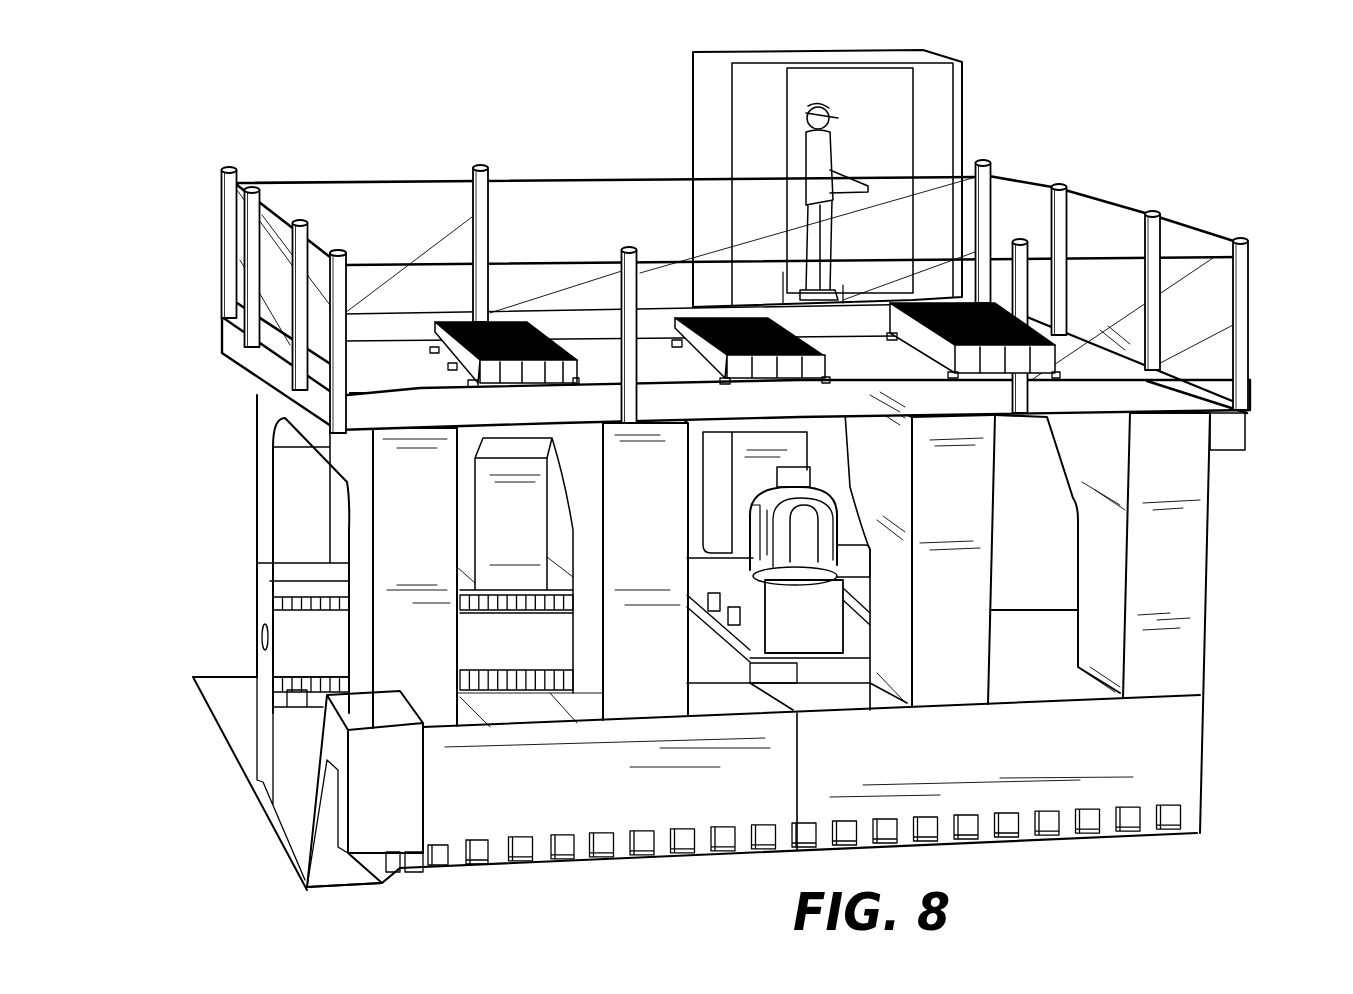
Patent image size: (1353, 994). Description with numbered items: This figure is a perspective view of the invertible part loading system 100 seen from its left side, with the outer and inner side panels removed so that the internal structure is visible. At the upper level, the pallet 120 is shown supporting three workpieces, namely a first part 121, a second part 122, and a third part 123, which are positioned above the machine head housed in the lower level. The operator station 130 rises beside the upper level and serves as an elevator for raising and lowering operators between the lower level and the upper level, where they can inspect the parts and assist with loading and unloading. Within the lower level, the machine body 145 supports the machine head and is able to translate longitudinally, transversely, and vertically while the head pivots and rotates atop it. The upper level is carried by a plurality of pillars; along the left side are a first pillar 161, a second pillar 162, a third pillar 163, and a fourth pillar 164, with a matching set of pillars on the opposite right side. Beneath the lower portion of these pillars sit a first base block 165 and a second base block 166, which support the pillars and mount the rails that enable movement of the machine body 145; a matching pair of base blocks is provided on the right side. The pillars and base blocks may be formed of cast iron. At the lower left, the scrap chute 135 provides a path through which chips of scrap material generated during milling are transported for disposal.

The invertible part loading system 100 is at (296, 100).
The operator station 130 is at (702, 71).
The pallet 120 is at (398, 358).
The first part 121 is at (975, 307).
The second part 122 is at (710, 312).
The third part 123 is at (503, 314).
The machine body 145 is at (820, 626).
The scrap chute 135 is at (373, 810).
The first pillar 161 is at (1183, 573).
The second pillar 162 is at (973, 578).
The third pillar 163 is at (622, 553).
The fourth pillar 164 is at (390, 553).
The first base block 165 is at (1060, 792).
The second base block 166 is at (500, 817).